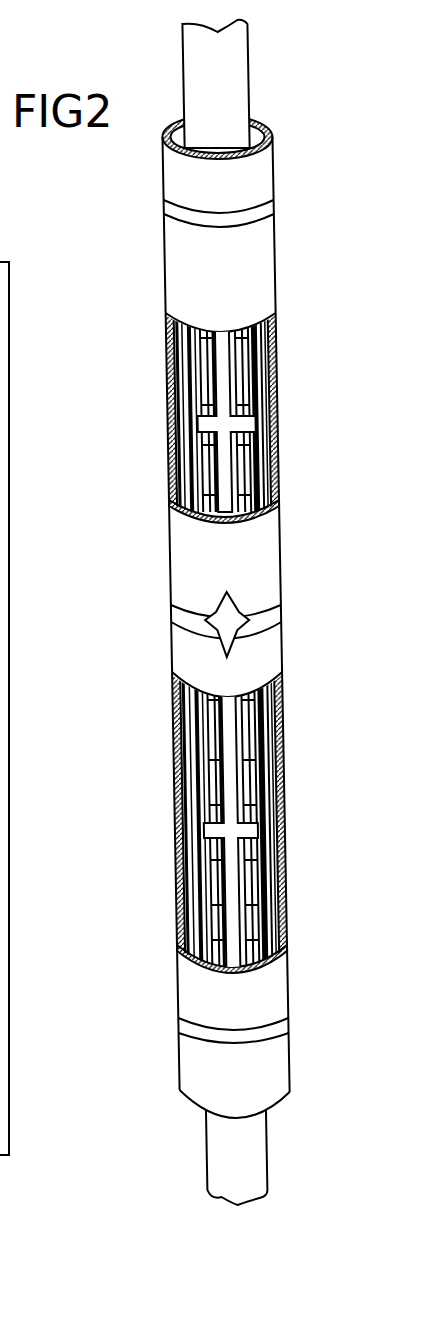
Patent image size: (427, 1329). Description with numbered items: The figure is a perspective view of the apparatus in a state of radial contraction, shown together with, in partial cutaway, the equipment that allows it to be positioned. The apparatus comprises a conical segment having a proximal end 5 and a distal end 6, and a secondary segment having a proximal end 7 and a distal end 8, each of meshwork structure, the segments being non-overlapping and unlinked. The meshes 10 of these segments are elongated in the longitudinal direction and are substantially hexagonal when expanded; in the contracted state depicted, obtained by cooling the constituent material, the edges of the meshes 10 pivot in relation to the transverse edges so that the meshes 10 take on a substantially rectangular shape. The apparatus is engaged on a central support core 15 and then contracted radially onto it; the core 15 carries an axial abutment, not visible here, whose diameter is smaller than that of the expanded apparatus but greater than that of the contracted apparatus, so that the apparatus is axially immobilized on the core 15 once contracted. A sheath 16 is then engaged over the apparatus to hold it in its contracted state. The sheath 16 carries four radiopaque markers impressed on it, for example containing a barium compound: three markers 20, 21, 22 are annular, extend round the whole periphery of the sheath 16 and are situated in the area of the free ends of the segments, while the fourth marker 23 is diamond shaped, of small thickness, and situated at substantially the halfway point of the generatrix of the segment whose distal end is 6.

The proximal end 5 is at (200, 881).
The distal end 6 is at (213, 776).
The proximal end 7 is at (165, 474).
The distal end 8 is at (166, 370).
The meshes 10 is at (245, 747).
The central support core 15 is at (230, 88).
The sheath 16 is at (250, 275).
The radiopaque marker 20 is at (273, 1032).
The radiopaque marker 21 is at (238, 220).
The radiopaque marker 22 is at (265, 625).
The radiopaque marker 23 is at (228, 610).